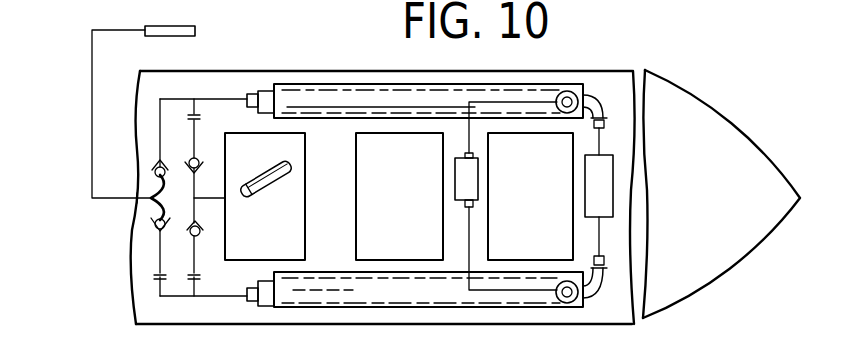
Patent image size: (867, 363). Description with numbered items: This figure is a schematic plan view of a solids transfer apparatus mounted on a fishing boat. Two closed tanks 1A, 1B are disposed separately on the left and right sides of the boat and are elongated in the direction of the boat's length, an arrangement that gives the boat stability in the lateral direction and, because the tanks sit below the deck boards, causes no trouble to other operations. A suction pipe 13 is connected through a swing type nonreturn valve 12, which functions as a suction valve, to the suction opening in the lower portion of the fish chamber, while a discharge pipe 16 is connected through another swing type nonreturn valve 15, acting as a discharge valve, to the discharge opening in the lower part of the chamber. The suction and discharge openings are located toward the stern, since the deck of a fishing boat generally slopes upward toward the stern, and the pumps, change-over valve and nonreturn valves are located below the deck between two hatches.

The closed tank 1A is at (291, 88).
The closed tank 1B is at (525, 292).
The swing type nonreturn valve 12 is at (197, 158).
The suction pipe 13 is at (240, 196).
The swing type nonreturn valve 15 is at (153, 168).
The discharge pipe 16 is at (93, 85).